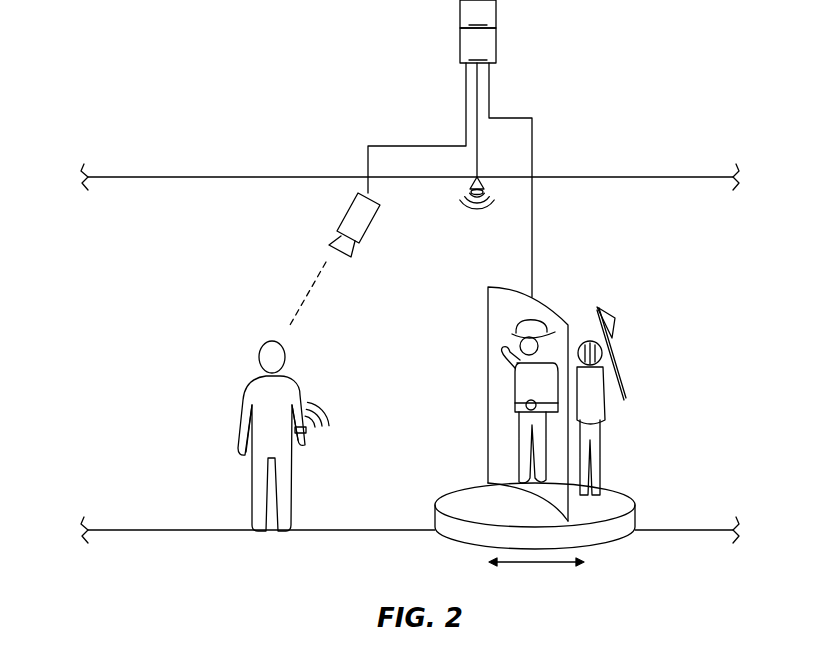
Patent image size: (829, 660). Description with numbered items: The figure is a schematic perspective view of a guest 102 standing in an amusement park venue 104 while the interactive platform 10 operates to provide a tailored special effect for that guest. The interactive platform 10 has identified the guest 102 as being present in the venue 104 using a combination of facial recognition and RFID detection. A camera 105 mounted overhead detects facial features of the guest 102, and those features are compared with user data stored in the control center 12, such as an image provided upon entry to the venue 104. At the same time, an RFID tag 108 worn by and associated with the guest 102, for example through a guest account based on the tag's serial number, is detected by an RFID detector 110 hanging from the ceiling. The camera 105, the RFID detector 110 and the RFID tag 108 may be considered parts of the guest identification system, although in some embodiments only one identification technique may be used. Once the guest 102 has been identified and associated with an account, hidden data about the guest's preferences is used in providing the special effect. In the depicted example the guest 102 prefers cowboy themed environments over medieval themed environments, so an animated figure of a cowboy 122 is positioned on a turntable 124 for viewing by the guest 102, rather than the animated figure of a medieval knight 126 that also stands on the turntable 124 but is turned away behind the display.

The interactive platform 10 is at (478, 45).
The control center 12 is at (478, 14).
The guest 102 is at (265, 344).
The amusement park venue 104 is at (621, 157).
The camera 105 is at (368, 225).
The RFID tag 108 is at (308, 430).
The RFID detector 110 is at (469, 185).
The animated figure of a cowboy 122 is at (522, 416).
The turntable 124 is at (636, 512).
The animated figure of a medieval knight 126 is at (603, 428).